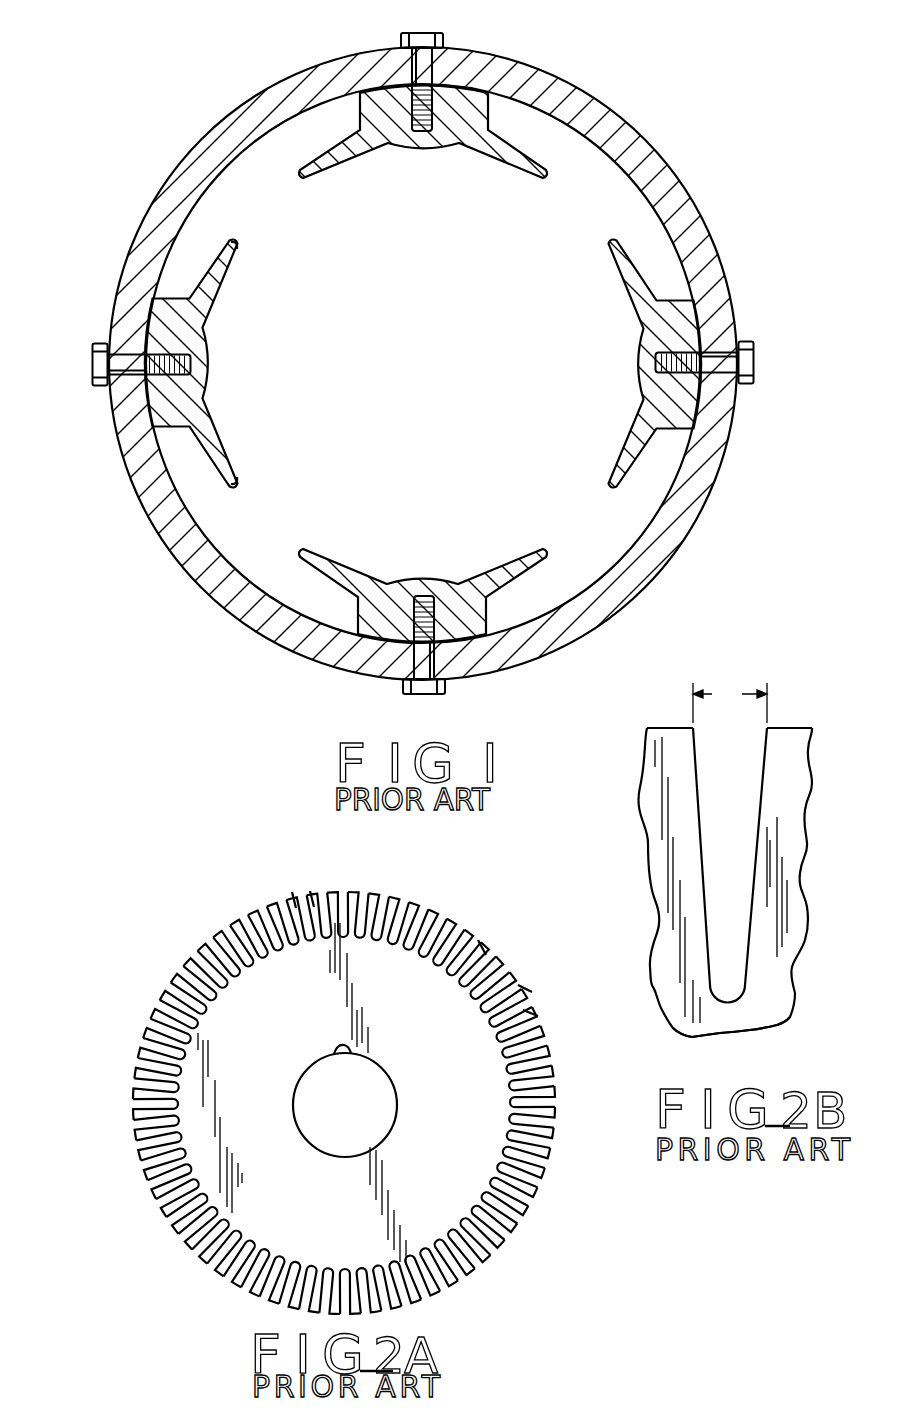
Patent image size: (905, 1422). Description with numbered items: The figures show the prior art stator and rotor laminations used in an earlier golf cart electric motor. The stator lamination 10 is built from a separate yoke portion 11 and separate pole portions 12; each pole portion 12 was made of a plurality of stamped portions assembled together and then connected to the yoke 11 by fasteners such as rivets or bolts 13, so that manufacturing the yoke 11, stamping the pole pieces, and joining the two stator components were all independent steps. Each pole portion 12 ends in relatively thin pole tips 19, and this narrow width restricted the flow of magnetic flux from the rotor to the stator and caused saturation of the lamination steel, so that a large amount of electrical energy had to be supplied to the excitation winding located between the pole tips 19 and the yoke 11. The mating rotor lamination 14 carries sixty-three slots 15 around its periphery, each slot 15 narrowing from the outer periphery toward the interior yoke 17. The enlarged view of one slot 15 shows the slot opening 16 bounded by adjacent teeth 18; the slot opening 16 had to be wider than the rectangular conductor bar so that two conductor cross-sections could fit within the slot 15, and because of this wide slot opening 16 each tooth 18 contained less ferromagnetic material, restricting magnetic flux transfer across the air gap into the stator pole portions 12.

In FIG. 1, the stator lamination 10 is at (452, 367).
In FIG. 1, the yoke portion 11 is at (703, 253).
In FIG. 1, the pole portion 12 is at (480, 92).
In FIG. 1, the bolt 13 is at (425, 33).
In FIG. 2A, the rotor lamination 14 is at (351, 1095).
In FIG. 2A, the slot 15 is at (482, 948).
In FIG. 2B, the slot 15 is at (739, 824).
In FIG. 2B, the slot opening 16 is at (730, 701).
In FIG. 2A, the interior yoke 17 is at (475, 1088).
In FIG. 2B, the interior yoke 17 is at (774, 1030).
In FIG. 2A, the tooth 18 is at (315, 898).
In FIG. 2B, the tooth 18 is at (666, 727).
In FIG. 1, the pole tip 19 is at (236, 246).